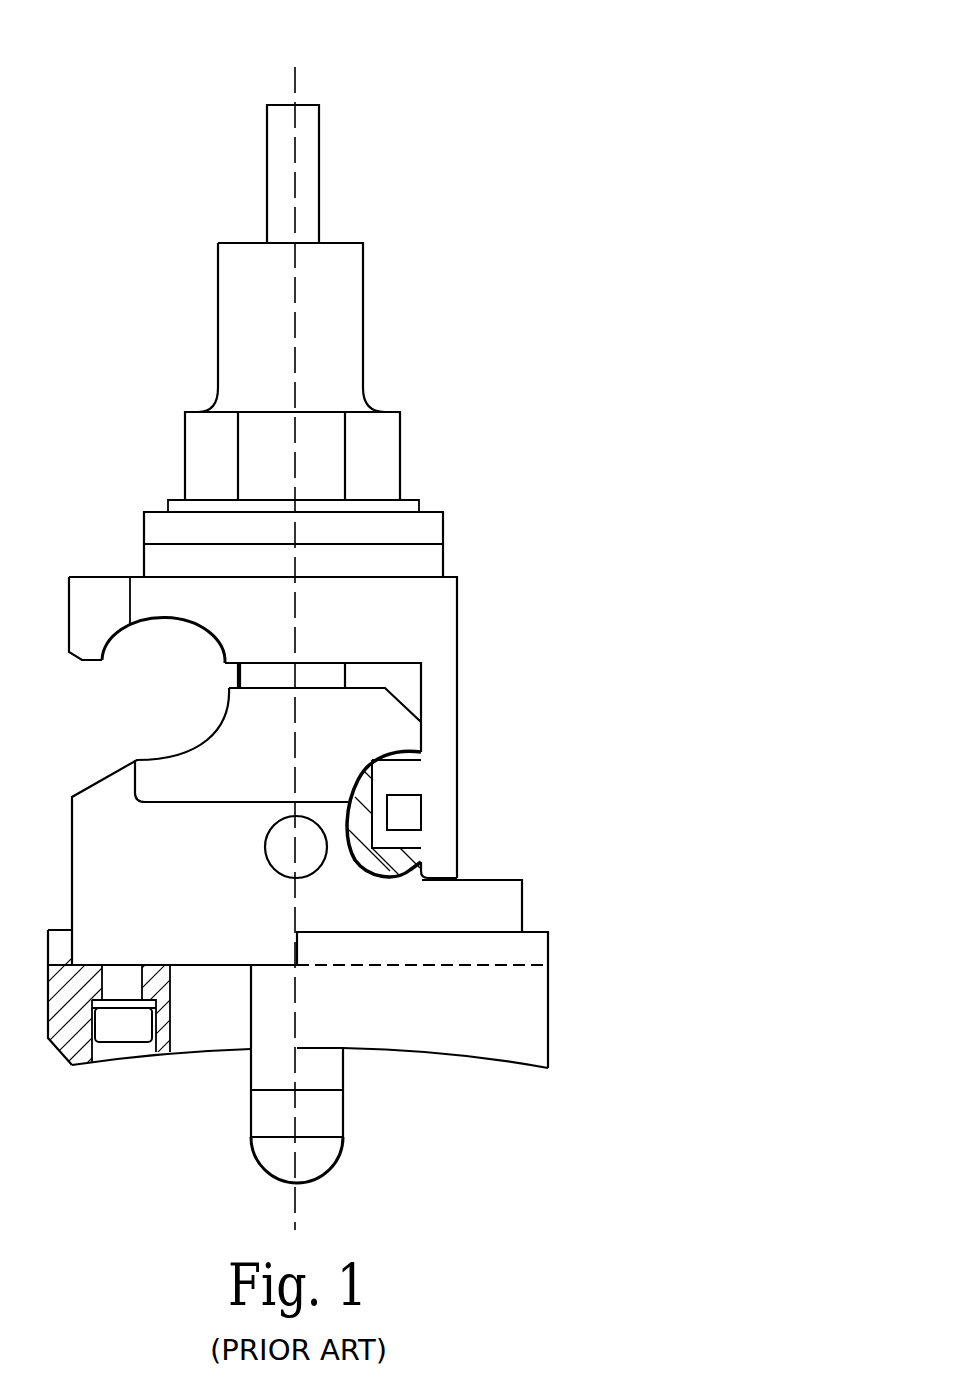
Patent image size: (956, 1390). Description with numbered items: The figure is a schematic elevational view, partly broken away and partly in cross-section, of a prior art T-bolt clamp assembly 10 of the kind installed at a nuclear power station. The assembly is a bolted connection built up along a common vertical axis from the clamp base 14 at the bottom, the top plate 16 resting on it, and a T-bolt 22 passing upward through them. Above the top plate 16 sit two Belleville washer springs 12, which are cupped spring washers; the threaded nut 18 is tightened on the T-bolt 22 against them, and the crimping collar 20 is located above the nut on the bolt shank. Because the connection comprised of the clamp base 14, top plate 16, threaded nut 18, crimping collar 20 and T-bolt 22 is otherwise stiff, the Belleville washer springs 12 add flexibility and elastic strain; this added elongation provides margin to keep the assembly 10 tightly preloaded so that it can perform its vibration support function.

The T-bolt clamp assembly 10 is at (643, 100).
The Belleville washer springs 12 is at (445, 557).
The clamp base 14 is at (528, 882).
The top plate 16 is at (458, 628).
The threaded nut 18 is at (403, 410).
The crimping collar 20 is at (365, 313).
The T-bolt 22 is at (320, 197).